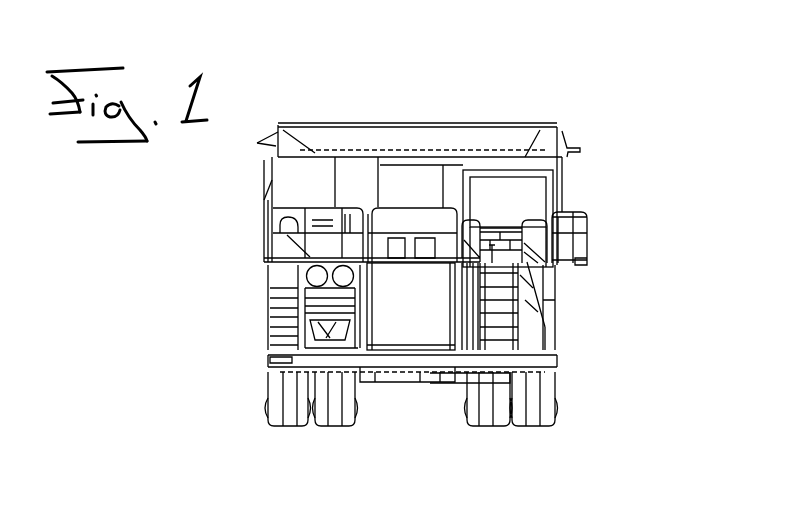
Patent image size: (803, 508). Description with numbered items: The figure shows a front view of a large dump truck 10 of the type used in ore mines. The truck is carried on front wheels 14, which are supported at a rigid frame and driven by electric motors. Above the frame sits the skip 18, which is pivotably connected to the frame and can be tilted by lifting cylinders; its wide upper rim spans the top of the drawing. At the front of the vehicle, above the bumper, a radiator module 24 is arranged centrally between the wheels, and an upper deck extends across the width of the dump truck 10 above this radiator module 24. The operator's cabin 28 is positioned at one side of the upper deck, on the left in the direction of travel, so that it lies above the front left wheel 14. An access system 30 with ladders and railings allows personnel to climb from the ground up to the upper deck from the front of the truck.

The dump truck 10 is at (626, 204).
The front wheels 14 is at (282, 416).
The skip 18 is at (503, 150).
The radiator module 24 is at (408, 328).
The operator's cabin 28 is at (572, 182).
The access system 30 is at (527, 325).